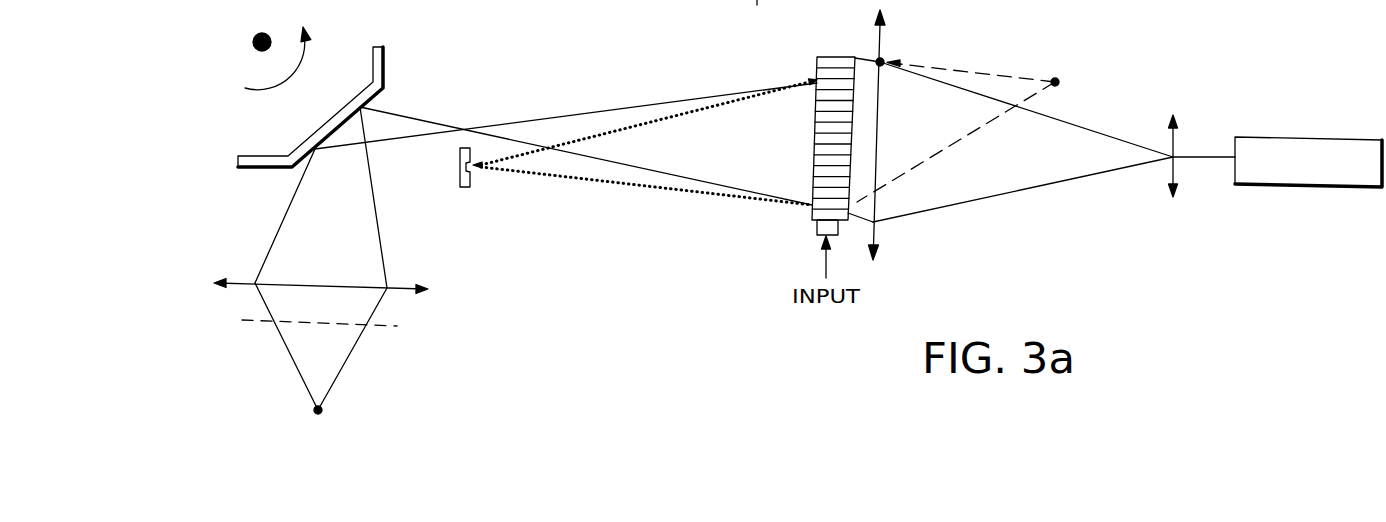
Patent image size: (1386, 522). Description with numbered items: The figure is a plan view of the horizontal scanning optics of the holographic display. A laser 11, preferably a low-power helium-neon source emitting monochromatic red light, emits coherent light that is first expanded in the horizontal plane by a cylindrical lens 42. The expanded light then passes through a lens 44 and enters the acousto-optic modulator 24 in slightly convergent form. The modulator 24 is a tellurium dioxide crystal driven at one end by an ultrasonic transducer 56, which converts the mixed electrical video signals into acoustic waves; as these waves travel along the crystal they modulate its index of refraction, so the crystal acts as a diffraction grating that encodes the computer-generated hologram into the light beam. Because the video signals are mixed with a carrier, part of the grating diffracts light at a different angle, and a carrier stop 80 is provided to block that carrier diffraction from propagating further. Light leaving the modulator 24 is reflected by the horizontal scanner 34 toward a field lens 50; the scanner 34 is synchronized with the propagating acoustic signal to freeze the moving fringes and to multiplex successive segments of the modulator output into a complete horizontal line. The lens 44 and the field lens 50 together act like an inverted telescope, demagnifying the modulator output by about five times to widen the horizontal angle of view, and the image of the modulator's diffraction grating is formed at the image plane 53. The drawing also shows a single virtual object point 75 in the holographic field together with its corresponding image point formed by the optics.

The laser 11 is at (1360, 190).
The acousto-optic modulator 24 is at (810, 212).
The horizontal scanner 34 is at (233, 80).
The cylindrical lens 42 is at (1167, 192).
The lens 44 is at (875, 232).
The field lens 50 is at (397, 295).
The image plane 53 is at (380, 326).
The ultrasonic transducer 56 is at (817, 228).
The virtual object point 75 is at (313, 413).
The carrier stop 80 is at (460, 173).